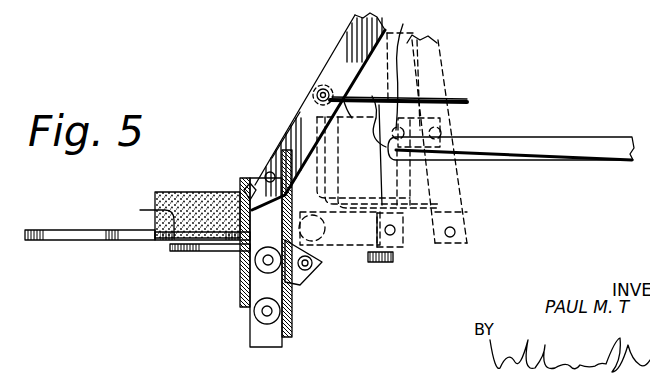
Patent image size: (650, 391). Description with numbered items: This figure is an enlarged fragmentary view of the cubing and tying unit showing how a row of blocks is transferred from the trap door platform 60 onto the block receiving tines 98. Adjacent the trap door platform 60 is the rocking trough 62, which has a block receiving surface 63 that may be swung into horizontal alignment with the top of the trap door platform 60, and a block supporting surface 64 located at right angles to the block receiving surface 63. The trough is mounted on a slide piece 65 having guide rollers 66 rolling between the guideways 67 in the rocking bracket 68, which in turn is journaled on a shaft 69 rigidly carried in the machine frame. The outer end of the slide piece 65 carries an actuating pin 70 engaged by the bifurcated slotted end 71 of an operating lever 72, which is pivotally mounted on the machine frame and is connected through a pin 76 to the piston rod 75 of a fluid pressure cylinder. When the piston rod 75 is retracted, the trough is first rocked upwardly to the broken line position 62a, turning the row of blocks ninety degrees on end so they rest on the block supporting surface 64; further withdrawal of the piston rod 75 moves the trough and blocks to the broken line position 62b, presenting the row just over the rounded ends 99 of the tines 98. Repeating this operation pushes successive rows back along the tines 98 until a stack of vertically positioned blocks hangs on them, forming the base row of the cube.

The trap door platform 60 is at (85, 238).
The rocking trough 62 is at (166, 243).
The broken line position of rocking trough 62a is at (334, 74).
The broken line position of rocking trough 62b is at (430, 120).
The block receiving surface 63 is at (165, 210).
The block supporting surface 64 is at (242, 192).
The slide piece 65 is at (272, 346).
The guide rollers 66 is at (255, 262).
The guideways 67 is at (278, 284).
The rocking bracket 68 is at (253, 315).
The shaft 69 is at (312, 263).
The actuating pin 70 is at (266, 172).
The bifurcated slotted end 71 is at (246, 182).
The operating lever 72 is at (291, 118).
The piston rod 75 is at (369, 133).
The pin 76 is at (316, 90).
The block receiving tines 98 is at (566, 142).
The rounded ends 99 is at (398, 93).